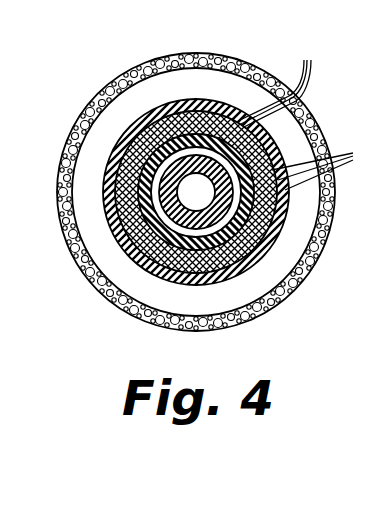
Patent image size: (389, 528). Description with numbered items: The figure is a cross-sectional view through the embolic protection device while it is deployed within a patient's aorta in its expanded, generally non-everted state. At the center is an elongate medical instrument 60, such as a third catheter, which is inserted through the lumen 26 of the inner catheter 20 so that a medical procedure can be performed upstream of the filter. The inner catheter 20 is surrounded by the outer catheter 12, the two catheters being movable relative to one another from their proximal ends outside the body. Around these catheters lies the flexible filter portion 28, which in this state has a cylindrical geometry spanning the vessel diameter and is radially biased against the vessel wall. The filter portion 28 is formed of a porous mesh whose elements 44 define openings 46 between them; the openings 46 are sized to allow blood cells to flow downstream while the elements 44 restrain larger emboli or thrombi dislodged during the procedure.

The outer catheter 12 is at (112, 140).
The lumen 26 is at (193, 150).
The elongate medical instrument 60 is at (177, 228).
The flexible filter portion 28 is at (257, 247).
The inner catheter 20 is at (238, 270).
The elements 44 is at (283, 83).
The openings 46 is at (328, 167).